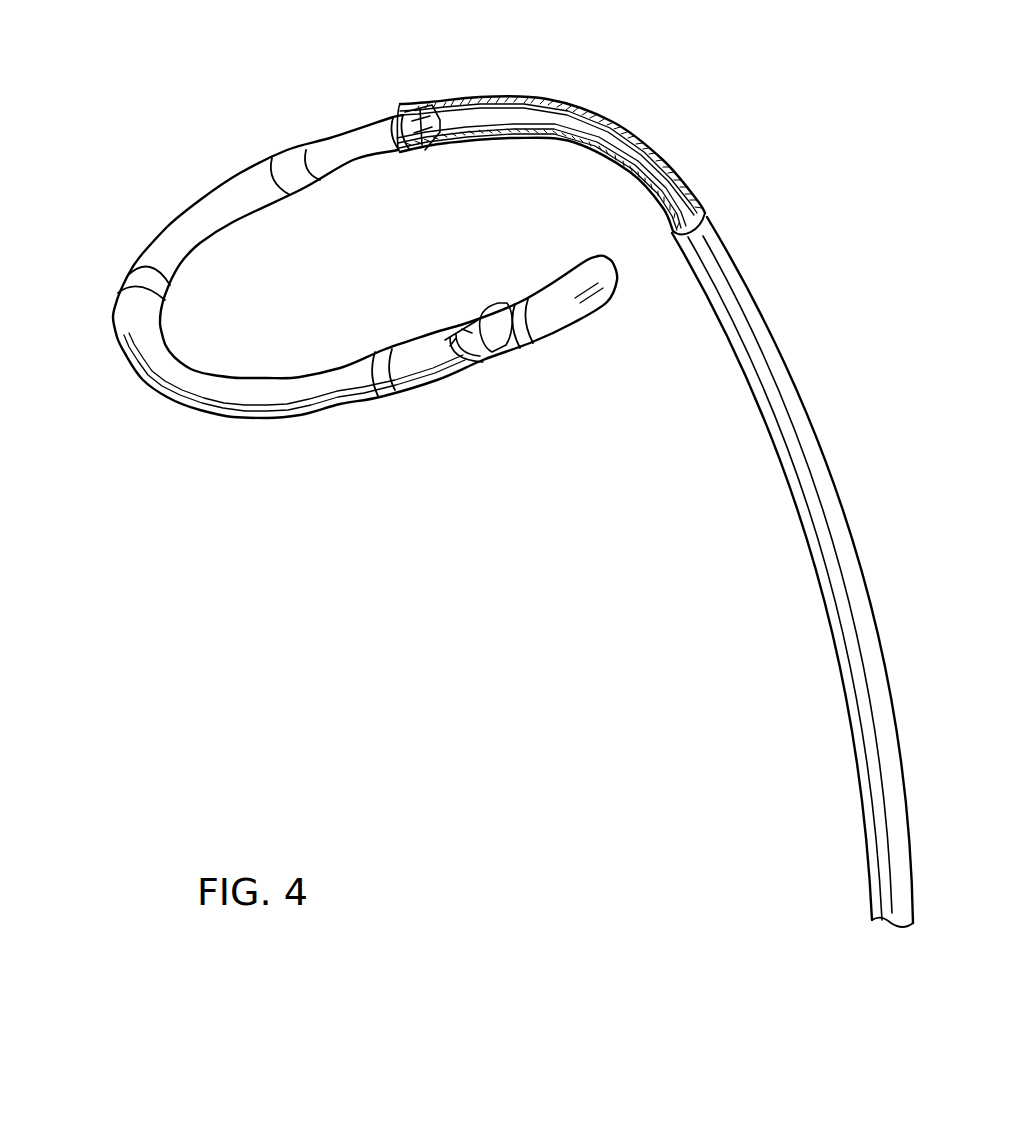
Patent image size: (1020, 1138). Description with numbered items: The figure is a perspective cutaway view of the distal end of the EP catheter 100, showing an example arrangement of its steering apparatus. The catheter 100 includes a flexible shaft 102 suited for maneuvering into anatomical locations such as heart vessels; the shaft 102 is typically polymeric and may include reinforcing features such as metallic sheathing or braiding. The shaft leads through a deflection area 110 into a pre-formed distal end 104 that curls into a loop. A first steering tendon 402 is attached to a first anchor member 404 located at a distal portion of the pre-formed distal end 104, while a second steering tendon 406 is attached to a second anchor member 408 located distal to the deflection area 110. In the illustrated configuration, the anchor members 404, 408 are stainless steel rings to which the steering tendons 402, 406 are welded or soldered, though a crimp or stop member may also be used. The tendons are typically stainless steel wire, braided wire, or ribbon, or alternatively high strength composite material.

The EP catheter 100 is at (398, 662).
The flexible shaft 102 is at (765, 412).
The pre-formed distal end 104 is at (176, 140).
The deflection area 110 is at (657, 88).
The first steering tendon 402 is at (522, 130).
The first anchor member 404 is at (470, 318).
The second steering tendon 406 is at (545, 103).
The second anchor member 408 is at (410, 122).